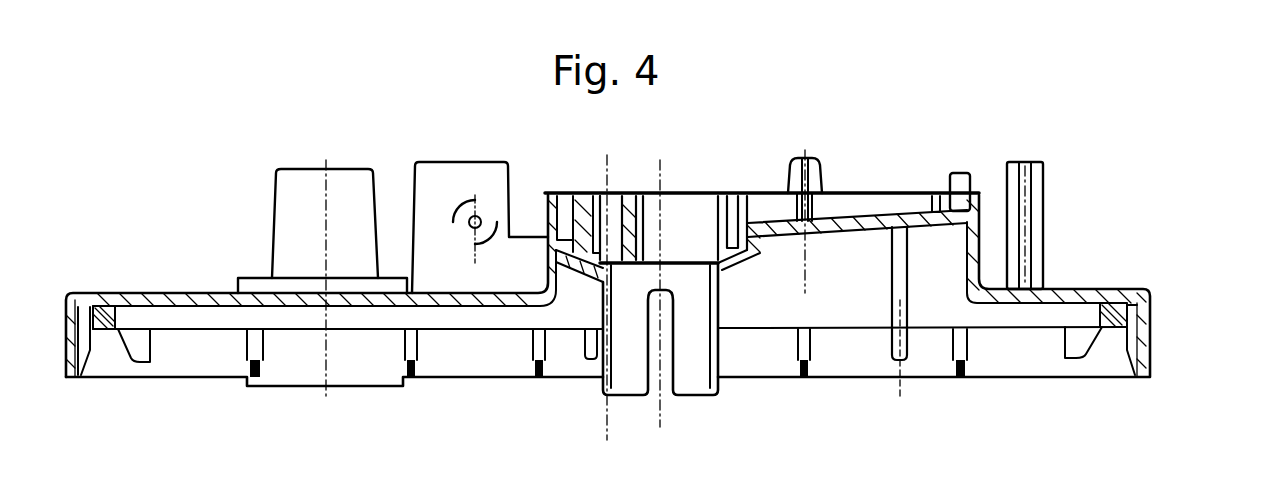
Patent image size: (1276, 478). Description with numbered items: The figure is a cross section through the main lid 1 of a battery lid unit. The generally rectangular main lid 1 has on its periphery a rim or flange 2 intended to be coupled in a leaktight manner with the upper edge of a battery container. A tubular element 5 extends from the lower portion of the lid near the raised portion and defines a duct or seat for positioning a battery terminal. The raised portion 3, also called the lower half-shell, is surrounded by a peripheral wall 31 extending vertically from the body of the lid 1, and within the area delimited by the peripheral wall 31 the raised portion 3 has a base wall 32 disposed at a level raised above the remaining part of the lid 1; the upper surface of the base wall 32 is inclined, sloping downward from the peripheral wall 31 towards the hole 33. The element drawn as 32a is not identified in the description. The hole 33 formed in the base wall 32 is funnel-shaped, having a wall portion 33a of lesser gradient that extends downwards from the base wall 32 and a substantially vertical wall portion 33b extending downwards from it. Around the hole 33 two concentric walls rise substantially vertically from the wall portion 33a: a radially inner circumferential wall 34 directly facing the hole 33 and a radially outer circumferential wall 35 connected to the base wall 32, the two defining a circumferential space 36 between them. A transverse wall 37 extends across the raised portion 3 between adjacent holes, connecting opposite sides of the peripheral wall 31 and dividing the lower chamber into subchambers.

The main lid 1 is at (1158, 273).
The rim or flange 2 is at (1152, 337).
The raised portion 3 is at (987, 250).
The tubular element 5 is at (273, 207).
The peripheral wall 31 is at (545, 210).
The base wall 32 is at (855, 238).
The tab 32a is at (882, 207).
The hole 33 is at (628, 398).
The wall portion of lesser gradient 33a is at (588, 323).
The substantially vertical wall portion 33b is at (722, 347).
The radially inner circumferential wall 34 is at (714, 223).
The radially outer circumferential wall 35 is at (755, 215).
The circumferential space 36 is at (588, 262).
The transverse wall 37 is at (852, 207).